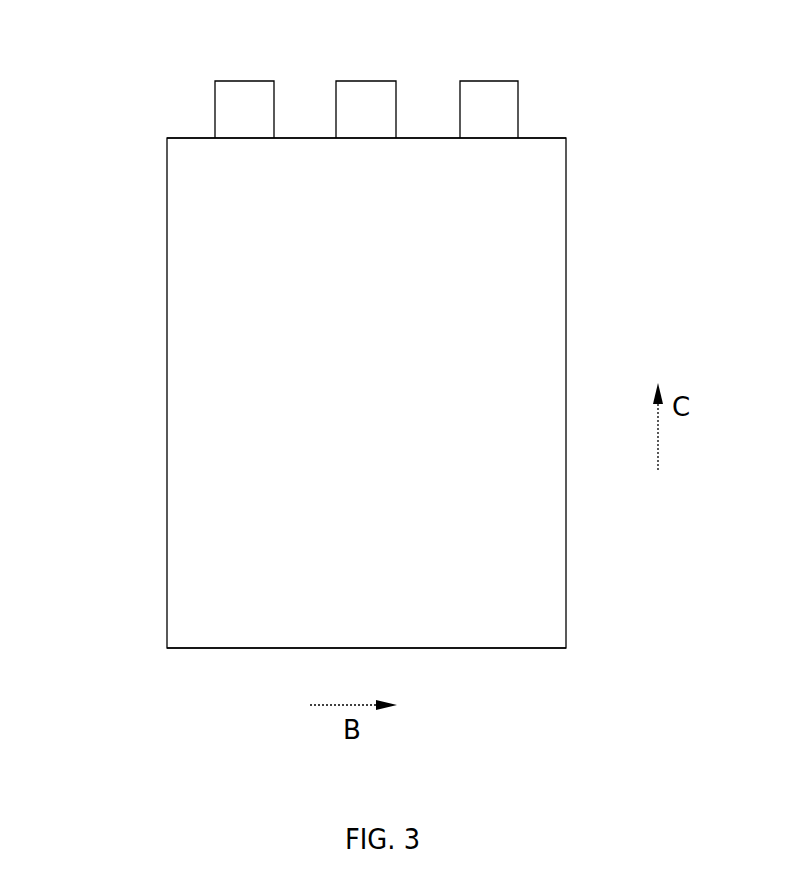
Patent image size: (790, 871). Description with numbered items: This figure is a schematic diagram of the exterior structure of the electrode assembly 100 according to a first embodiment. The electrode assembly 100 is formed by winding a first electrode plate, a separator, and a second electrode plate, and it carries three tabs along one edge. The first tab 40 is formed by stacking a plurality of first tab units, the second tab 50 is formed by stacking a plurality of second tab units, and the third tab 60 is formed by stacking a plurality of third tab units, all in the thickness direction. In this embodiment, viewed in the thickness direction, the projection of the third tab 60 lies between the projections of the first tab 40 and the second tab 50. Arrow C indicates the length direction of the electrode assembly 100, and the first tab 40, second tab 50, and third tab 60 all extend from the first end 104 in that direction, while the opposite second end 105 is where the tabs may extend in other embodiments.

The electrode assembly 100 is at (194, 347).
The first tab 40 is at (237, 94).
The third tab 60 is at (373, 94).
The second tab 50 is at (505, 95).
The first end 104 is at (545, 138).
The second end 105 is at (493, 648).